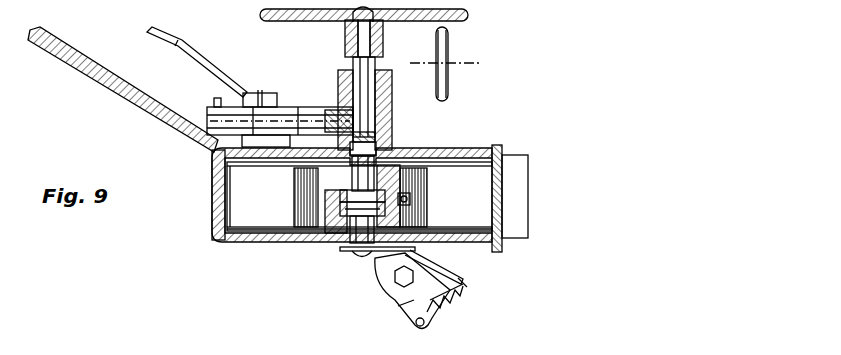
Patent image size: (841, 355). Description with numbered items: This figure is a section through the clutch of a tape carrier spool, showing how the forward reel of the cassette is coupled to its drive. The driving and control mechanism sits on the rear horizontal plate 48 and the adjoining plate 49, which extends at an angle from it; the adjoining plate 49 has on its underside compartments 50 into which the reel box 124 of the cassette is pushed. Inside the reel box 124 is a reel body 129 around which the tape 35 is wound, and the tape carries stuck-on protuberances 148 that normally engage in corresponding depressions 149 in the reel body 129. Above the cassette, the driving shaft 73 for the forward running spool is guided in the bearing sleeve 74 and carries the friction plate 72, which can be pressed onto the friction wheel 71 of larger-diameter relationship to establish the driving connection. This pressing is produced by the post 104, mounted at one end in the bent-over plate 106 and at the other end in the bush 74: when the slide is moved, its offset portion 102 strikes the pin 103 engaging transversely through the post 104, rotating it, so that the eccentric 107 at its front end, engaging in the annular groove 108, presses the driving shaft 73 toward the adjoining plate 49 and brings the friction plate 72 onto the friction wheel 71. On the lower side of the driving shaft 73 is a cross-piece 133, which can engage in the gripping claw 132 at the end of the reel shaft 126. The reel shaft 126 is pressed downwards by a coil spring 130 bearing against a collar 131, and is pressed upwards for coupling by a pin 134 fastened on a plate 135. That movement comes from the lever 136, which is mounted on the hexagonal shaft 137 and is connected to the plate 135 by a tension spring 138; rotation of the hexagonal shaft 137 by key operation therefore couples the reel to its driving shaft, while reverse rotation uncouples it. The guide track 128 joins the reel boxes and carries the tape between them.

The rear horizontal plate 48 is at (72, 62).
The offset portion 102 is at (245, 93).
The pin 103 is at (253, 92).
The post 104 is at (292, 120).
The bent-over plate 106 is at (213, 100).
The eccentric 107 is at (336, 110).
The friction plate 72 is at (468, 18).
The driving shaft 73 is at (370, 72).
The bearing sleeve 74 is at (390, 95).
The annular groove 108 is at (388, 127).
The cross-piece 133 is at (380, 141).
The gripping claw 132 is at (376, 158).
The friction wheel 71 is at (446, 55).
The compartments 50 is at (234, 243).
The reel box 124 is at (212, 220).
The depressions 149 is at (282, 243).
The reel body 129 is at (322, 243).
The tape 35 is at (300, 188).
The reel shaft 126 is at (405, 180).
The protuberances 148 is at (412, 202).
The collar 131 is at (348, 217).
The coil spring 130 is at (345, 221).
The pin 134 is at (358, 258).
The hexagonal shaft 137 is at (396, 283).
The plate 135 is at (445, 264).
The lever 136 is at (440, 313).
The tension spring 138 is at (460, 290).
The adjoining plate 49 is at (460, 155).
The guide track 128 is at (510, 163).